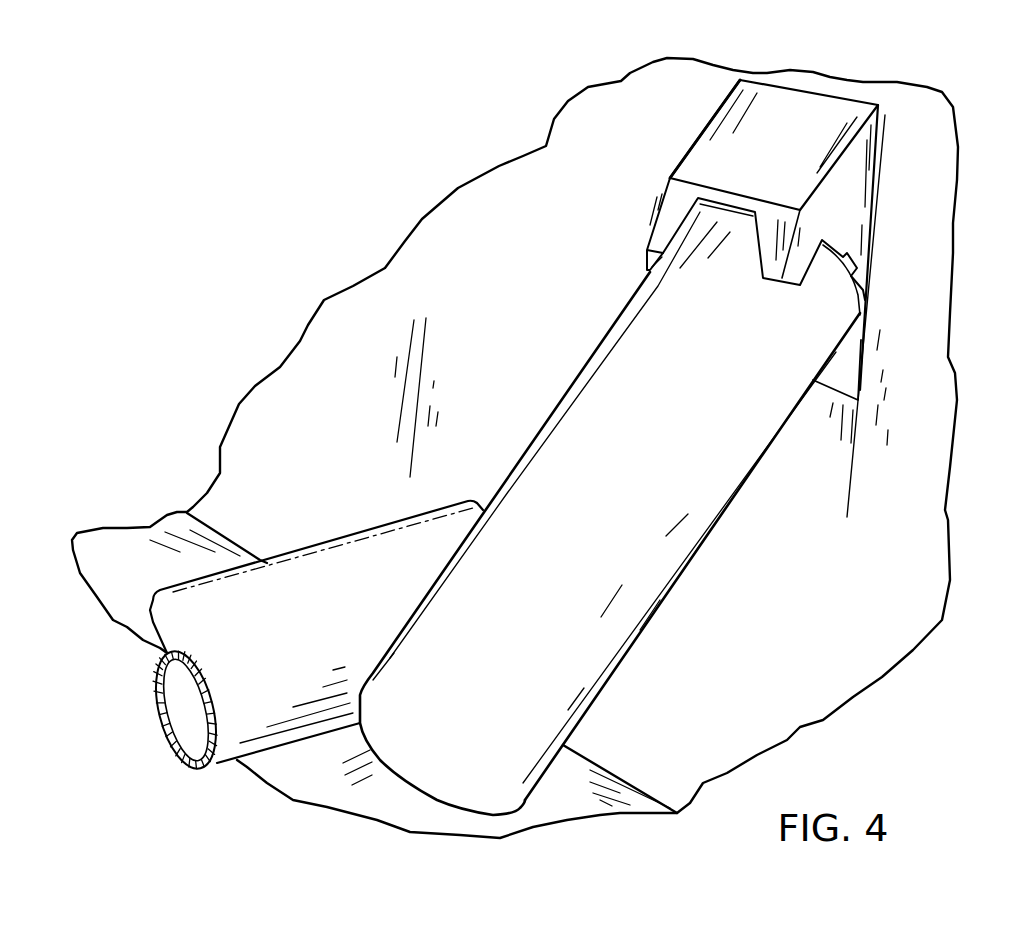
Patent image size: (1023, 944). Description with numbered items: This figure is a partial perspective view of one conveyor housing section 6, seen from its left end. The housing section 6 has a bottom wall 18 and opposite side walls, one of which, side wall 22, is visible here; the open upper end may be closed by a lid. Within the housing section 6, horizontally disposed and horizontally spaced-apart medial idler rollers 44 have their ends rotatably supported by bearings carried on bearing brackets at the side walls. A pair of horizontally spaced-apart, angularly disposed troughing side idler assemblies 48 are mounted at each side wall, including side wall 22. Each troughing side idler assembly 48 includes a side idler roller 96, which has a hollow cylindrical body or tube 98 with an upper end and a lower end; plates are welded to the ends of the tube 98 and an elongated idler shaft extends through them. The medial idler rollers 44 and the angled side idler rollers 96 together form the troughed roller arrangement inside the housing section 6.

The conveyor housing section 6 is at (542, 105).
The bottom wall 18 is at (594, 790).
The side wall 22 is at (489, 350).
The medial idler roller 44 is at (378, 560).
The troughing side idler assembly 48 is at (852, 90).
The side idler roller 96 is at (741, 569).
The hollow cylindrical body or tube 98 is at (639, 613).